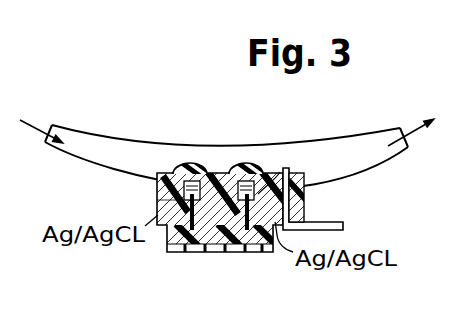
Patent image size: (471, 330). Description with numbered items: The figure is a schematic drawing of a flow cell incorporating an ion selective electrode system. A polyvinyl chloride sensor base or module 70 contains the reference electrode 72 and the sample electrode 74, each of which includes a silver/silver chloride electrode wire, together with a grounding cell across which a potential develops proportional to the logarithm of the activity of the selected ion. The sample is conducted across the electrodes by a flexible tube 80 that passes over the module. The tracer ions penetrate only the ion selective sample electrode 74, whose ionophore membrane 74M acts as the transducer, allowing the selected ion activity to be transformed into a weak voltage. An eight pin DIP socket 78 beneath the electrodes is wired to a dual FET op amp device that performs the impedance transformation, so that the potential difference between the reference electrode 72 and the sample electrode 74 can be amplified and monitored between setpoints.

The sensor base or module 70 is at (305, 196).
The reference electrode 72 is at (157, 186).
The sample electrode 74 is at (280, 172).
The ionophore membrane 74M is at (243, 166).
The eight pin DIP socket 78 is at (220, 253).
The flexible tube 80 is at (360, 138).